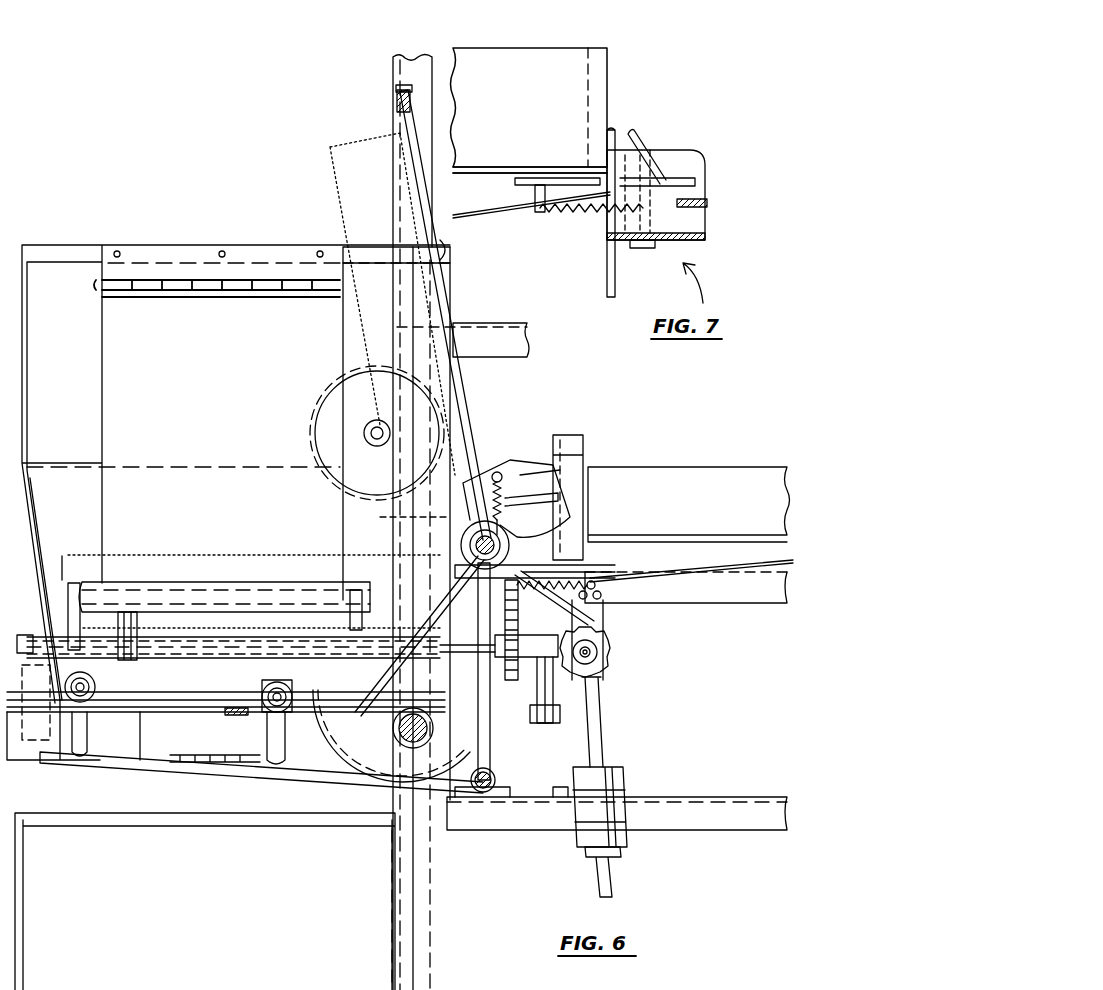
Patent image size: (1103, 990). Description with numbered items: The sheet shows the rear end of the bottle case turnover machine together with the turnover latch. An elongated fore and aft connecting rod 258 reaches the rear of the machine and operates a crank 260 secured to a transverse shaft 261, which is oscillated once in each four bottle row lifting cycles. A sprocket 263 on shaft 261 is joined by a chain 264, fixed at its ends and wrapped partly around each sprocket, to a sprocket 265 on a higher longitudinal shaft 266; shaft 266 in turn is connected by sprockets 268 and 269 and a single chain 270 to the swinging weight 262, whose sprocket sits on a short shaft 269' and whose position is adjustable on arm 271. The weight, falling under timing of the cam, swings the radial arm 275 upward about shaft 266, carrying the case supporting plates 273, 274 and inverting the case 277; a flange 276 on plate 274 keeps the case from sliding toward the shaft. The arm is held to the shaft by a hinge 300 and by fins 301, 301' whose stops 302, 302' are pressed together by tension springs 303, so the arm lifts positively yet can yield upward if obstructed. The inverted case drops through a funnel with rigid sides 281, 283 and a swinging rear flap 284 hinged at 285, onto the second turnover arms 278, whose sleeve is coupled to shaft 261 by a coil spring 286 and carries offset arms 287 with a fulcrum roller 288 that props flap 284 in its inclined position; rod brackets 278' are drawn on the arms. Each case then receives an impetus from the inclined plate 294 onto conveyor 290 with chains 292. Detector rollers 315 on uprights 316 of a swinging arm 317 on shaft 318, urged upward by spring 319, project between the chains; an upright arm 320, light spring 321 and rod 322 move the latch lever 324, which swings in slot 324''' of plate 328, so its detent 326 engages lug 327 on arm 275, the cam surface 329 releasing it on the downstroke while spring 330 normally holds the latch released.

In FIG. 6, the connecting rod 258 is at (540, 728).
In FIG. 6, the crank 260 is at (535, 710).
In FIG. 6, the transverse shaft 261 is at (20, 640).
In FIG. 6, the weight 262 is at (620, 790).
In FIG. 6, the sprocket 263 is at (512, 680).
In FIG. 6, the chain 264 is at (600, 572).
In FIG. 6, the sprocket 265 is at (475, 440).
In FIG. 6, the longitudinal shaft 266 is at (508, 512).
In FIG. 6, the sprocket 268 is at (590, 540).
In FIG. 6, the sprocket 269 is at (616, 640).
In FIG. 6, the short shaft 269' is at (635, 662).
In FIG. 6, the chain 270 is at (585, 615).
In FIG. 6, the arm 271 is at (600, 730).
In FIG. 6, the case supporting plate 273 is at (400, 125).
In FIG. 6, the case supporting plate 274 is at (462, 395).
In FIG. 6, the radial arm 275 is at (440, 240).
In FIG. 7, the radial arm 275 is at (445, 242).
In FIG. 6, the flange 276 is at (340, 518).
In FIG. 6, the case 277 is at (334, 190).
In FIG. 7, the case 277 is at (535, 62).
In FIG. 6, the arms 278 is at (233, 623).
In FIG. 6, the rod bracket 278' is at (128, 611).
In FIG. 6, the rigid side 281 is at (40, 482).
In FIG. 6, the rigid side 283 is at (399, 518).
In FIG. 6, the swinging transverse side 284 is at (340, 357).
In FIG. 6, the hinge 285 is at (98, 286).
In FIG. 6, the coil spring 286 is at (305, 668).
In FIG. 6, the offset arms 287 is at (66, 556).
In FIG. 6, the fulcrum roller 288 is at (205, 590).
In FIG. 6, the conveyor 290 is at (195, 712).
In FIG. 6, the chains 292 is at (180, 722).
In FIG. 6, the inclined plate 294 is at (475, 562).
In FIG. 6, the hinge 300 is at (499, 470).
In FIG. 6, the fin 301 is at (556, 489).
In FIG. 6, the fin 301' is at (607, 497).
In FIG. 6, the stop 302 is at (553, 470).
In FIG. 6, the stop 302' is at (587, 457).
In FIG. 6, the tension springs 303 is at (512, 497).
In FIG. 6, the detector roller 315 is at (95, 682).
In FIG. 6, the uprights 316 is at (265, 740).
In FIG. 6, the swinging arm 317 is at (236, 772).
In FIG. 6, the longitudinal shaft 318 is at (498, 778).
In FIG. 6, the spring 319 is at (433, 725).
In FIG. 6, the upright arm 320 is at (490, 585).
In FIG. 6, the tension spring 321 is at (532, 630).
In FIG. 6, the connecting rod 322 is at (700, 575).
In FIG. 7, the connecting rod 322 is at (495, 208).
In FIG. 7, the latch lever 324 is at (648, 262).
In FIG. 7, the slot 324''' is at (683, 175).
In FIG. 7, the detent 326 is at (595, 122).
In FIG. 6, the lug 327 is at (394, 108).
In FIG. 7, the lug 327 is at (708, 200).
In FIG. 7, the transverse plate 328 is at (708, 165).
In FIG. 7, the cam surface 329 is at (645, 140).
In FIG. 7, the spring 330 is at (592, 220).